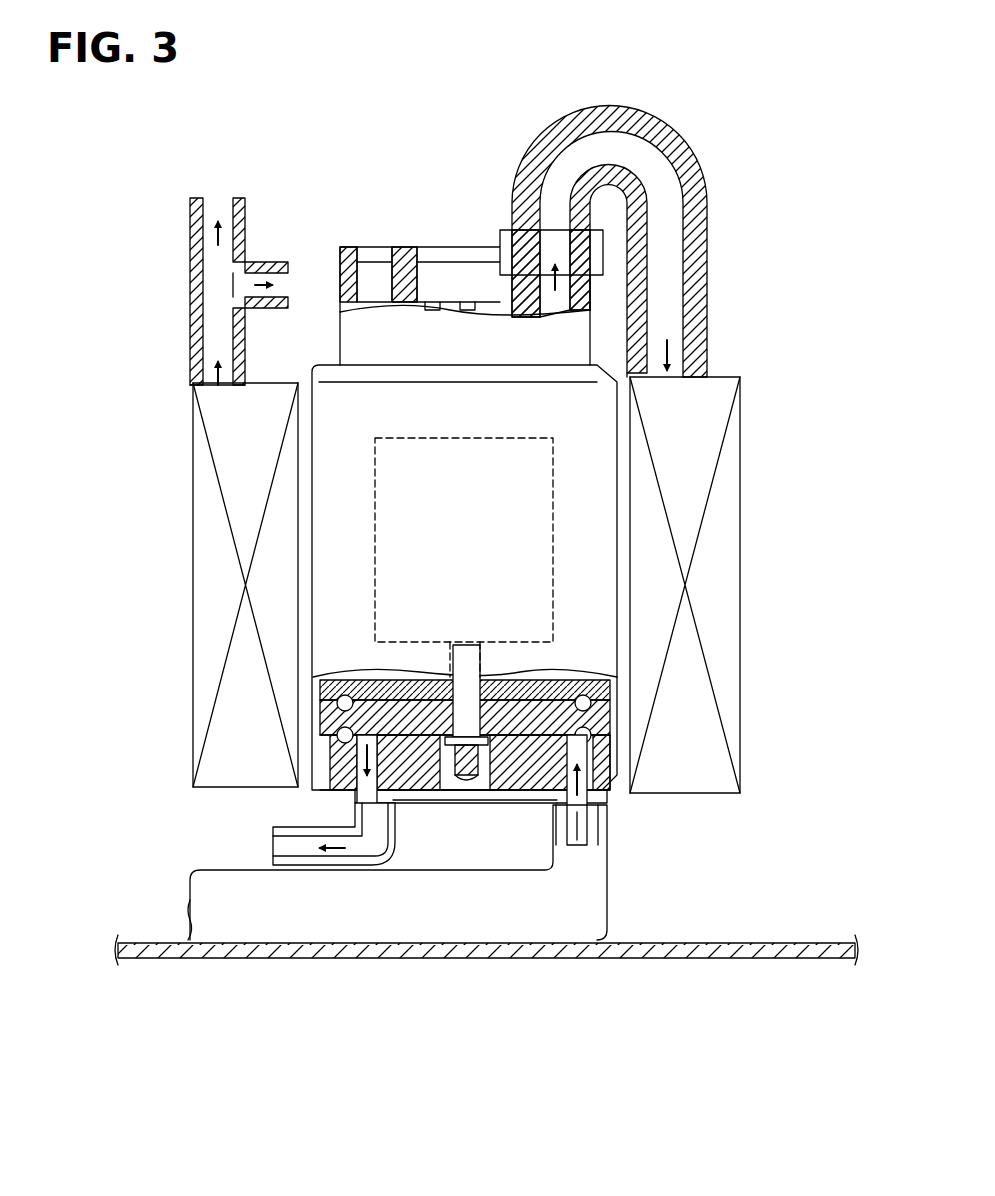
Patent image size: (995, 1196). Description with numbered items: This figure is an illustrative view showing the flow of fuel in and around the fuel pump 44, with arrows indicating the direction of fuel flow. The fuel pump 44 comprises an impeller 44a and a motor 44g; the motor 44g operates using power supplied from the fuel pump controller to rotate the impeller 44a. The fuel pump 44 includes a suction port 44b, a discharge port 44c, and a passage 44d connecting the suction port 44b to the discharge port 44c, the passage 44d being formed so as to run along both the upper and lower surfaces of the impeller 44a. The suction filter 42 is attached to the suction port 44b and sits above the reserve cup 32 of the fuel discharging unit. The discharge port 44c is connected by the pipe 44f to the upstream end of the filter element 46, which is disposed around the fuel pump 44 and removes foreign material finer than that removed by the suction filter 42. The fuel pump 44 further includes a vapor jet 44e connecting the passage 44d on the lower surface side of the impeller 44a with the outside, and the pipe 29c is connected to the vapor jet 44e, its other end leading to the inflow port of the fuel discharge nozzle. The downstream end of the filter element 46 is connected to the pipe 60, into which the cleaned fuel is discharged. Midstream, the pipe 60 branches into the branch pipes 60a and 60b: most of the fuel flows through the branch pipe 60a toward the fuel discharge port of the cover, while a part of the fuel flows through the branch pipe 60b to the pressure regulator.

The pipe 60 is at (186, 274).
The branch pipe 60a is at (243, 203).
The branch pipe 60b is at (270, 263).
The fuel pump 44 is at (337, 403).
The impeller 44a is at (590, 705).
The suction port 44b is at (580, 833).
The discharge port 44c is at (547, 260).
The passage 44d is at (578, 745).
The vapor jet 44e is at (355, 800).
The pipe 44f is at (713, 227).
The motor 44g is at (517, 568).
The filter element 46 is at (740, 512).
The pipe 29c is at (283, 848).
The suction filter 42 is at (253, 923).
The reserve cup 32 is at (308, 958).